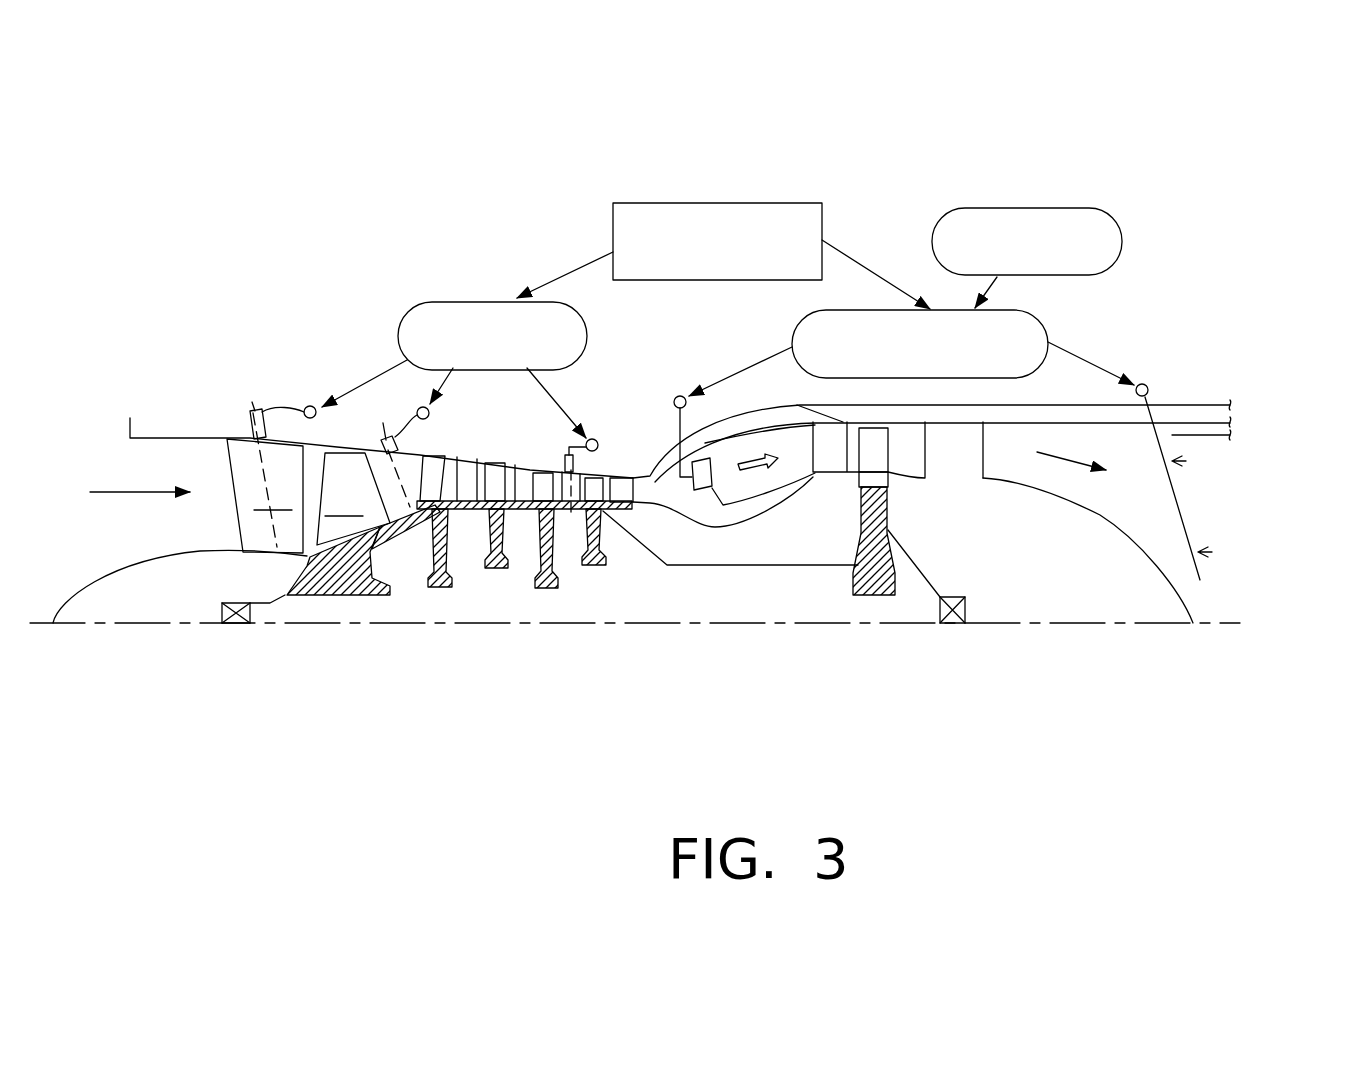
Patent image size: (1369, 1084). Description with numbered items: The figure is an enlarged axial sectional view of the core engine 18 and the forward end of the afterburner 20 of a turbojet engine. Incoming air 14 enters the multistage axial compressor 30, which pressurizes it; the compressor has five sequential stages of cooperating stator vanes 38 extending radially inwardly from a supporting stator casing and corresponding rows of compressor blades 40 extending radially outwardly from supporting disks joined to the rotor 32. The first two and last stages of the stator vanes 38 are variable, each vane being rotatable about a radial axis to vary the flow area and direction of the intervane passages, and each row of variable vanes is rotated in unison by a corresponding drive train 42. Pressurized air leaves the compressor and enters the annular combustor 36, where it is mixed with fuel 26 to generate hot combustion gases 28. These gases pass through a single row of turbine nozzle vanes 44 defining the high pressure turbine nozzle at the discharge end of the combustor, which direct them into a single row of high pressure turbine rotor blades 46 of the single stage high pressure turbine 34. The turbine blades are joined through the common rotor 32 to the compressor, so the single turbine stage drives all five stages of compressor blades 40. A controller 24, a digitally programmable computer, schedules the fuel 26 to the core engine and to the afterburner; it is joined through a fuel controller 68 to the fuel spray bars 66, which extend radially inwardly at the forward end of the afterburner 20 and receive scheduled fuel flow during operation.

The incoming air 14 is at (113, 490).
The core engine 18 is at (384, 620).
The afterburner 20 is at (1187, 400).
The controller 24 is at (657, 202).
The fuel 26 is at (1057, 207).
The hot combustion gases 28 is at (1057, 460).
The multistage axial compressor 30 is at (503, 460).
The rotor 32 is at (723, 567).
The high pressure turbine 34 is at (847, 500).
The annular combustor 36 is at (743, 430).
The stator vanes 38 is at (572, 506).
The compressor blades 40 is at (603, 475).
The drive train 42 is at (400, 316).
The turbine nozzle vanes 44 is at (815, 452).
The high pressure turbine rotor blades 46 is at (892, 457).
The fuel spray bars 66 is at (1183, 512).
The fuel controller 68 is at (1037, 313).